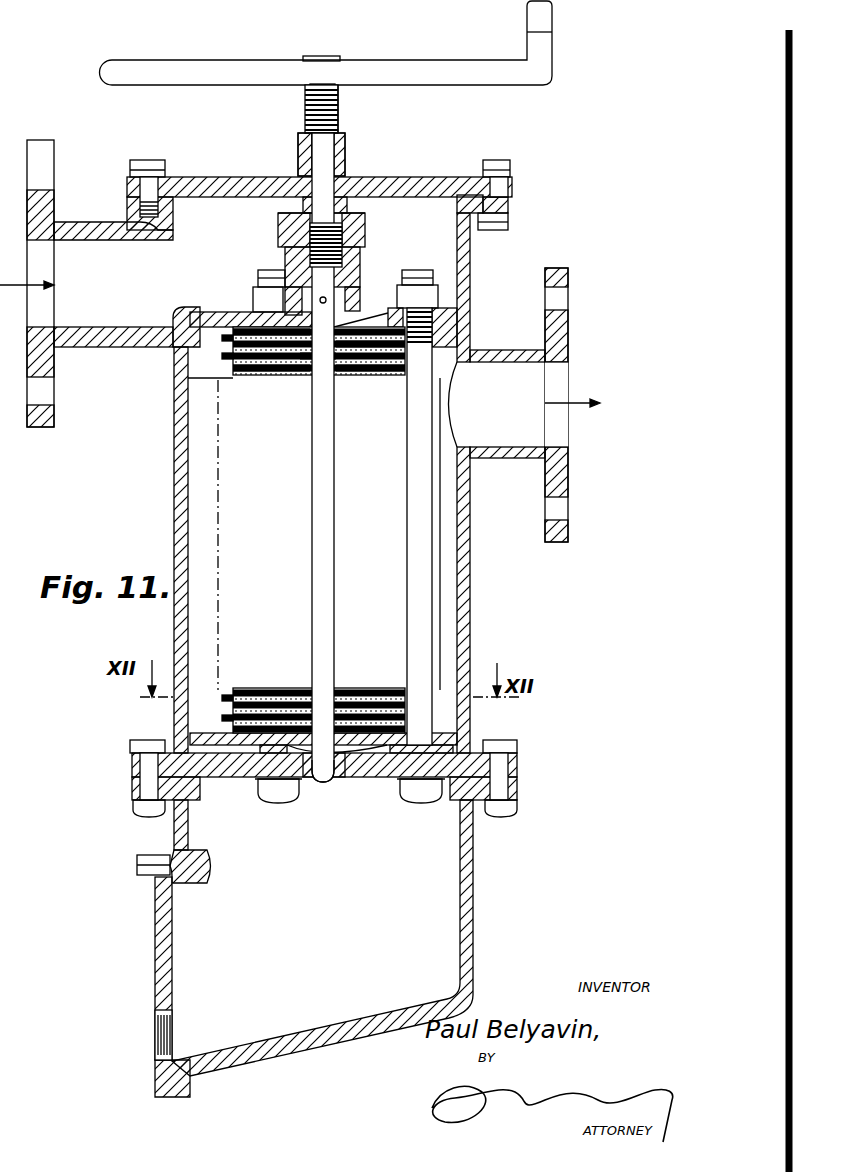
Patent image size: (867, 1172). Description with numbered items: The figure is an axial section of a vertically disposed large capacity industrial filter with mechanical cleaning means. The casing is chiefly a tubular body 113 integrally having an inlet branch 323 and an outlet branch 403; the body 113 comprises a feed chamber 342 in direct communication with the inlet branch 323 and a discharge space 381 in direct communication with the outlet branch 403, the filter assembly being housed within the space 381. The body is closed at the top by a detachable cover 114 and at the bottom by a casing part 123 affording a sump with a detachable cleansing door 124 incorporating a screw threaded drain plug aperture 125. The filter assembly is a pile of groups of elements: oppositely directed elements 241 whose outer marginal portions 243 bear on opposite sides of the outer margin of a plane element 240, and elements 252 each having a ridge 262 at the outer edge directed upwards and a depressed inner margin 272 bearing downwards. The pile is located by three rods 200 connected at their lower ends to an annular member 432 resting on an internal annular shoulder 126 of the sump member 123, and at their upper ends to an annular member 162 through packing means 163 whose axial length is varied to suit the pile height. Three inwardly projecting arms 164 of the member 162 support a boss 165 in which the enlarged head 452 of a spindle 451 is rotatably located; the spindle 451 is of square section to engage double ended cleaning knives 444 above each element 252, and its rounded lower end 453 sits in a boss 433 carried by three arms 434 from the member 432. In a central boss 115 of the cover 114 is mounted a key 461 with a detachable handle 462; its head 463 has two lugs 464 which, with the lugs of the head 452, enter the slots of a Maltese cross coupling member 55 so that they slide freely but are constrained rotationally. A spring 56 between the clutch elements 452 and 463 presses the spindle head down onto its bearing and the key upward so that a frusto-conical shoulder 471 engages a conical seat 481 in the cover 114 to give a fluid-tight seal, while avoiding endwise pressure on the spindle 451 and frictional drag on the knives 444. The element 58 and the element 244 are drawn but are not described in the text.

The central boss 115 is at (300, 148).
The threaded spindle portion 58 is at (307, 100).
The key 461 is at (338, 110).
The detachable handle 462 is at (448, 70).
The head of the key 463 is at (296, 190).
The conical seat 481 is at (310, 172).
The frusto-conical shoulder 471 is at (325, 160).
The lugs 464 is at (378, 195).
The enlarged head 452 is at (352, 195).
The detachable cover 114 is at (413, 182).
The feed chamber 342 is at (510, 168).
The coupling member 55 is at (280, 238).
The spring 56 is at (285, 258).
The boss 165 is at (376, 287).
The inwardly projecting arms 164 is at (403, 280).
The tubular body 113 is at (461, 273).
The inlet branch 323 is at (86, 283).
The annular member 162 is at (195, 308).
The packing means 163 is at (440, 296).
The outer marginal portions 243 is at (233, 354).
The plane element 240 is at (233, 360).
The element 241 is at (273, 363).
The packing ring 244 is at (235, 377).
The depressed inner margin 272 is at (373, 378).
The element 252 is at (393, 378).
The ridge 262 is at (407, 366).
The outlet branch 403 is at (535, 405).
The double ended cleaning knives 444 is at (333, 378).
The discharge space 381 is at (196, 504).
The spindle 451 is at (322, 540).
The rods 200 is at (418, 546).
The annular member 432 is at (193, 733).
The internal annular shoulder 126 is at (193, 783).
The arms 434 is at (292, 767).
The boss 433 is at (350, 770).
The lower end of the spindle 453 is at (322, 775).
The casing part 123 is at (470, 883).
The detachable cleansing door 124 is at (163, 947).
The drain plug aperture 125 is at (154, 1037).